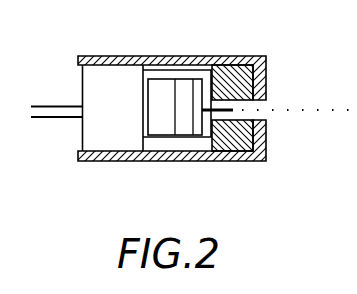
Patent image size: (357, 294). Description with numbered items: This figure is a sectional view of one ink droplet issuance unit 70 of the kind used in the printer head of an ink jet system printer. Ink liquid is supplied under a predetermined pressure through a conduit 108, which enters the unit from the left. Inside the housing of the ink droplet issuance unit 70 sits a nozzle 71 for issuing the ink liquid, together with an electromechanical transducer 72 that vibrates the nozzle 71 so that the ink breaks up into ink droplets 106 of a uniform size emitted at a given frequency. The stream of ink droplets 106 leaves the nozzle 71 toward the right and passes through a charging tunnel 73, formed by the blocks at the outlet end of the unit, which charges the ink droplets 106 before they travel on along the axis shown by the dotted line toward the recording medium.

The ink droplet issuance unit 70 is at (184, 57).
The nozzle 71 is at (197, 134).
The electromechanical transducer 72 is at (162, 126).
The charging tunnel 73 is at (243, 152).
The ink droplets 106 is at (304, 108).
The conduit 108 is at (53, 108).